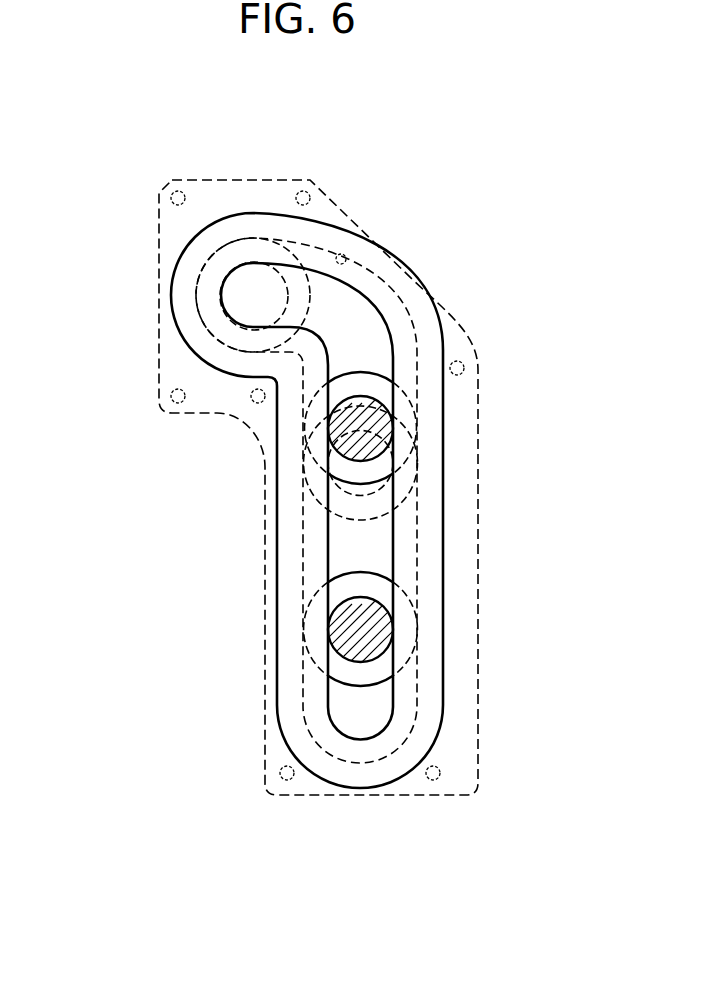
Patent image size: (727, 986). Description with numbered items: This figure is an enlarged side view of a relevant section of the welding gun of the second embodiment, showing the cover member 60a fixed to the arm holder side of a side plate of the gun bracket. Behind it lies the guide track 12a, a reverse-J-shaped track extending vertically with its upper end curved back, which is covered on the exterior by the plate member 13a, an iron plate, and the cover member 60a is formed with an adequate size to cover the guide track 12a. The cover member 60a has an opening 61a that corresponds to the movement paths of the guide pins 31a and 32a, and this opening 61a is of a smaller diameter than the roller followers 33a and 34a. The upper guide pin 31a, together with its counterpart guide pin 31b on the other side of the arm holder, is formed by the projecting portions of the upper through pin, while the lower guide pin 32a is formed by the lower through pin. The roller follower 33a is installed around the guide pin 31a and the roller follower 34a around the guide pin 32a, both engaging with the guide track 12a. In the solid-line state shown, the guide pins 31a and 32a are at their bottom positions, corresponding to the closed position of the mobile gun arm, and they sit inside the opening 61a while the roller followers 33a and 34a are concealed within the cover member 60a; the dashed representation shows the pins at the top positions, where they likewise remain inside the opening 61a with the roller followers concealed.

The plate member 13a is at (159, 238).
The guide track 12a is at (343, 255).
The cover member 60a is at (401, 258).
The opening 61a is at (380, 318).
The guide pin 31a is at (350, 408).
The guide pin 31b is at (254, 277).
The guide pin 32a is at (383, 492).
The roller follower 33a is at (234, 250).
The roller follower 34a is at (420, 470).